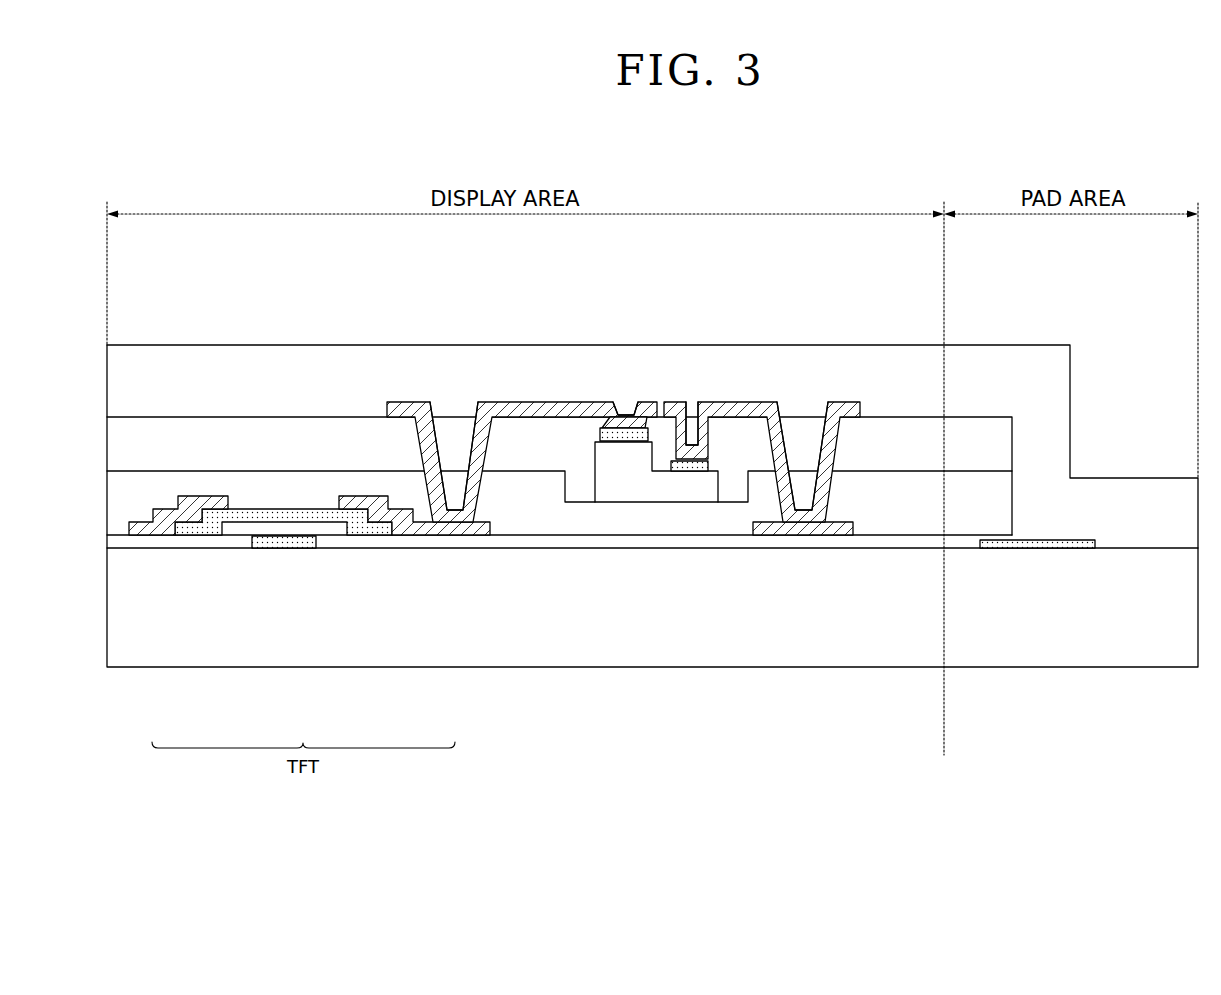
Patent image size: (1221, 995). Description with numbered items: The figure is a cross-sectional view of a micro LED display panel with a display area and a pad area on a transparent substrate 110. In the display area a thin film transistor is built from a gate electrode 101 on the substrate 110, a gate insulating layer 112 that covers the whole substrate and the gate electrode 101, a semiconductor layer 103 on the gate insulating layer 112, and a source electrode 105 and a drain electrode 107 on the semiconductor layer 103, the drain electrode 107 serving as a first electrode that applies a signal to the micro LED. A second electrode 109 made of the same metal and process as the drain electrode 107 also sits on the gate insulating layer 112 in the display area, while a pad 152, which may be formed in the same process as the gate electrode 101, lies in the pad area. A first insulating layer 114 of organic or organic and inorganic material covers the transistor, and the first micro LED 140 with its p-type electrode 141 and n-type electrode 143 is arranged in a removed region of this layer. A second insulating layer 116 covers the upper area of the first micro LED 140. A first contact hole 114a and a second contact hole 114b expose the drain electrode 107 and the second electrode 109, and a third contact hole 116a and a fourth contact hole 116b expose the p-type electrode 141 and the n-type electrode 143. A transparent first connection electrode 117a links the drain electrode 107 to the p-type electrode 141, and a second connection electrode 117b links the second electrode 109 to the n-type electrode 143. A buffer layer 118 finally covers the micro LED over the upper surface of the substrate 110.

The gate electrode 101 is at (264, 543).
The semiconductor layer 103 is at (364, 527).
The source electrode 105 is at (150, 527).
The drain electrode 107 is at (451, 528).
The second electrode 109 is at (768, 530).
The substrate 110 is at (560, 642).
The gate insulating layer 112 is at (863, 542).
The first insulating layer 114 is at (992, 491).
The first contact hole 114a is at (458, 396).
The second contact hole 114b is at (805, 395).
The second insulating layer 116 is at (992, 436).
The third contact hole 116a is at (625, 393).
The fourth contact hole 116b is at (692, 392).
The first connection electrode 117a is at (556, 408).
The second connection electrode 117b is at (856, 405).
The buffer layer 118 is at (1034, 378).
The first micro LED 140 is at (650, 430).
The p-type electrode 141 is at (608, 422).
The n-type electrode 143 is at (698, 461).
The pad 152 is at (1066, 550).